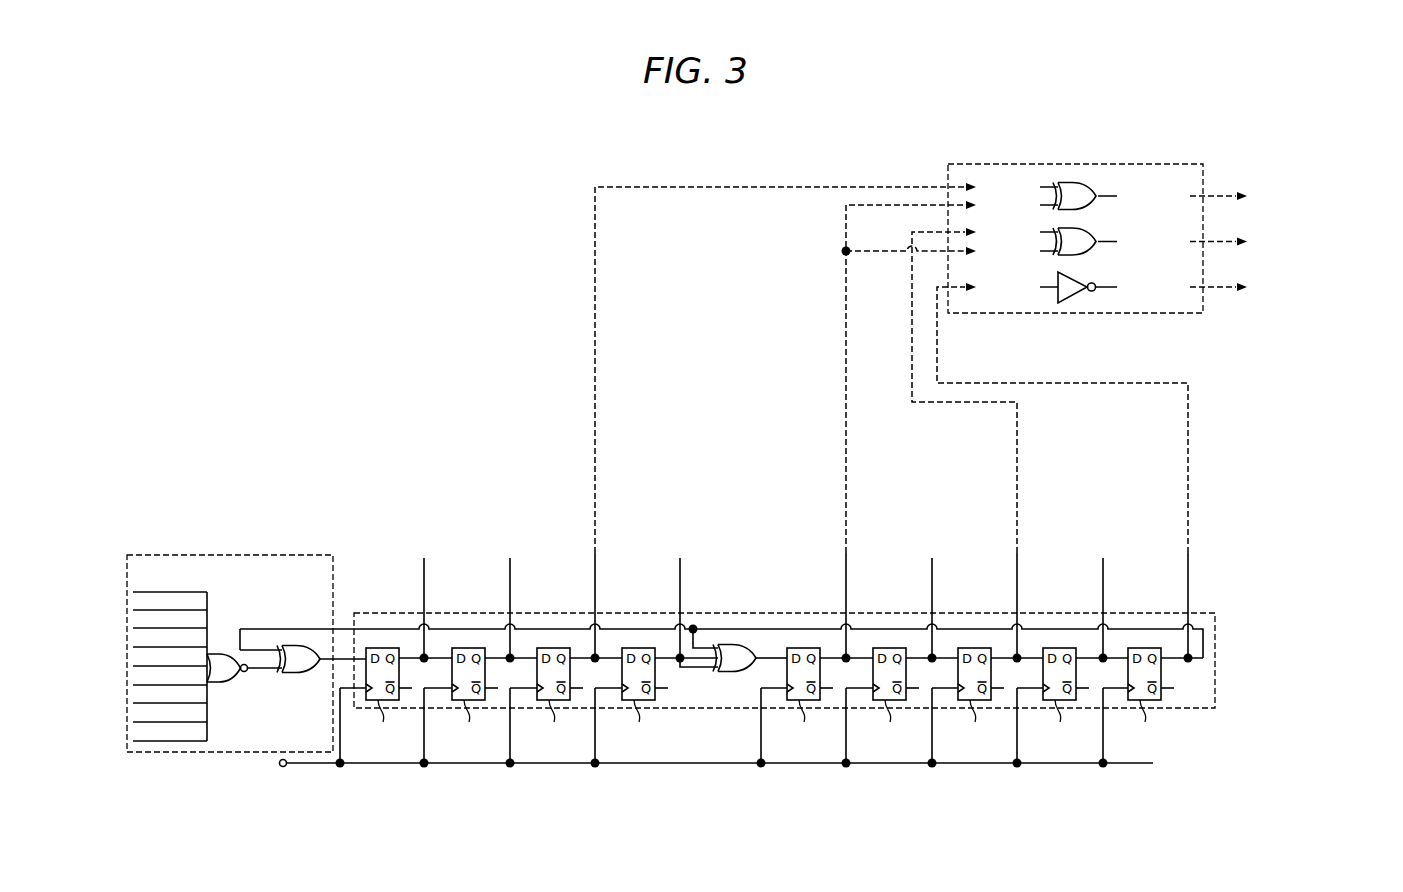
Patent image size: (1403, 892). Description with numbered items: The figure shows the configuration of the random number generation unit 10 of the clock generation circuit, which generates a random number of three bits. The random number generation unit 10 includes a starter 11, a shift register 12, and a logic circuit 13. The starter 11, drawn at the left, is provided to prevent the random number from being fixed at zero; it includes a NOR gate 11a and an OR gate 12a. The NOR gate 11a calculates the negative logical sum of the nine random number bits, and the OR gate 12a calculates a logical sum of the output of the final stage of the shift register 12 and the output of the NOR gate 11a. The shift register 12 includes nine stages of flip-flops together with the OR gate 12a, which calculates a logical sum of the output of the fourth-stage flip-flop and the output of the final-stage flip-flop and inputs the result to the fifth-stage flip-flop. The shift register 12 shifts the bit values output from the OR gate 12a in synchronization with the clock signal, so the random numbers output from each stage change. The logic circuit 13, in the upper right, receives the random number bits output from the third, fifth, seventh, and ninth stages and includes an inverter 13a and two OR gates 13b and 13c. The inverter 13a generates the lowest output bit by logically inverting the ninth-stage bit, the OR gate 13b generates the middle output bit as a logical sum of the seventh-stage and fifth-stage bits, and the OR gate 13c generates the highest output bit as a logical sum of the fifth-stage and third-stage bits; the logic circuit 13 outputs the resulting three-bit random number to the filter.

The random number generation unit 10 is at (211, 178).
The starter 11 is at (289, 558).
The NOR gate 11a is at (220, 668).
The shift register 12 is at (372, 612).
The OR gate 12a is at (300, 664).
The logic circuit 13 is at (1158, 164).
The inverter 13a is at (1069, 291).
The OR gate 13b is at (1097, 243).
The OR gate 13c is at (1077, 193).